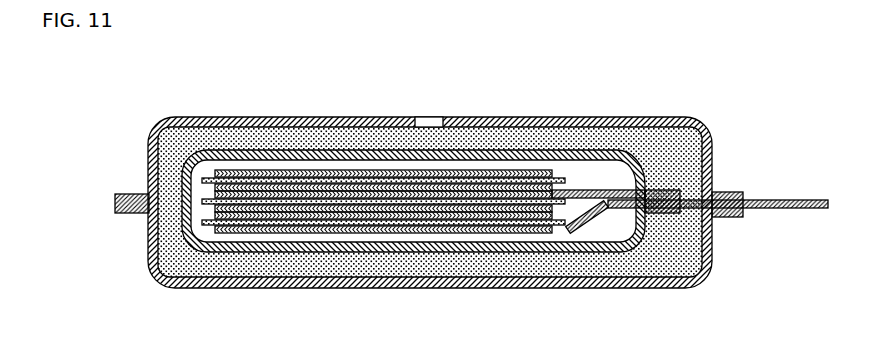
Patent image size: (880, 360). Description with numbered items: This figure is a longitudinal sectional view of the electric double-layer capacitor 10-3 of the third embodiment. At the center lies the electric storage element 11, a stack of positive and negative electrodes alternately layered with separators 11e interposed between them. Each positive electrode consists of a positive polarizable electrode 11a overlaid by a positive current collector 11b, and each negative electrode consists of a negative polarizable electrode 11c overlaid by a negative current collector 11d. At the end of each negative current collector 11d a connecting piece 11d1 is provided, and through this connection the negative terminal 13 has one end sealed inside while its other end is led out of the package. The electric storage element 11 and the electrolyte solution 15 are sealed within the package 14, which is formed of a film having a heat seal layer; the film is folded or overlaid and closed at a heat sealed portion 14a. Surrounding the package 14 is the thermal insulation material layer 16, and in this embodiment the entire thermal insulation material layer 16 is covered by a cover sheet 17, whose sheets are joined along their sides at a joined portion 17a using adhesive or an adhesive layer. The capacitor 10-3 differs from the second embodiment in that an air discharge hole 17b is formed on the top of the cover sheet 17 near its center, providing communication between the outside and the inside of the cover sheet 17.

The electric double-layer capacitor 10-3 is at (471, 203).
The electric storage element 11 is at (423, 203).
The positive polarizable electrode 11a is at (273, 180).
The positive current collector 11b is at (312, 172).
The negative polarizable electrode 11c is at (350, 188).
The negative current collector 11d is at (391, 192).
The connecting piece 11d1 is at (588, 216).
The separator 11e is at (480, 197).
The negative terminal 13 is at (787, 200).
The package 14 is at (546, 152).
The heat sealed portion 14a is at (655, 191).
The electrolyte solution 15 is at (617, 178).
The thermal insulation material layer 16 is at (513, 140).
The cover sheet 17 is at (588, 121).
The joined portion 17a is at (725, 192).
The air discharge hole 17b is at (433, 121).